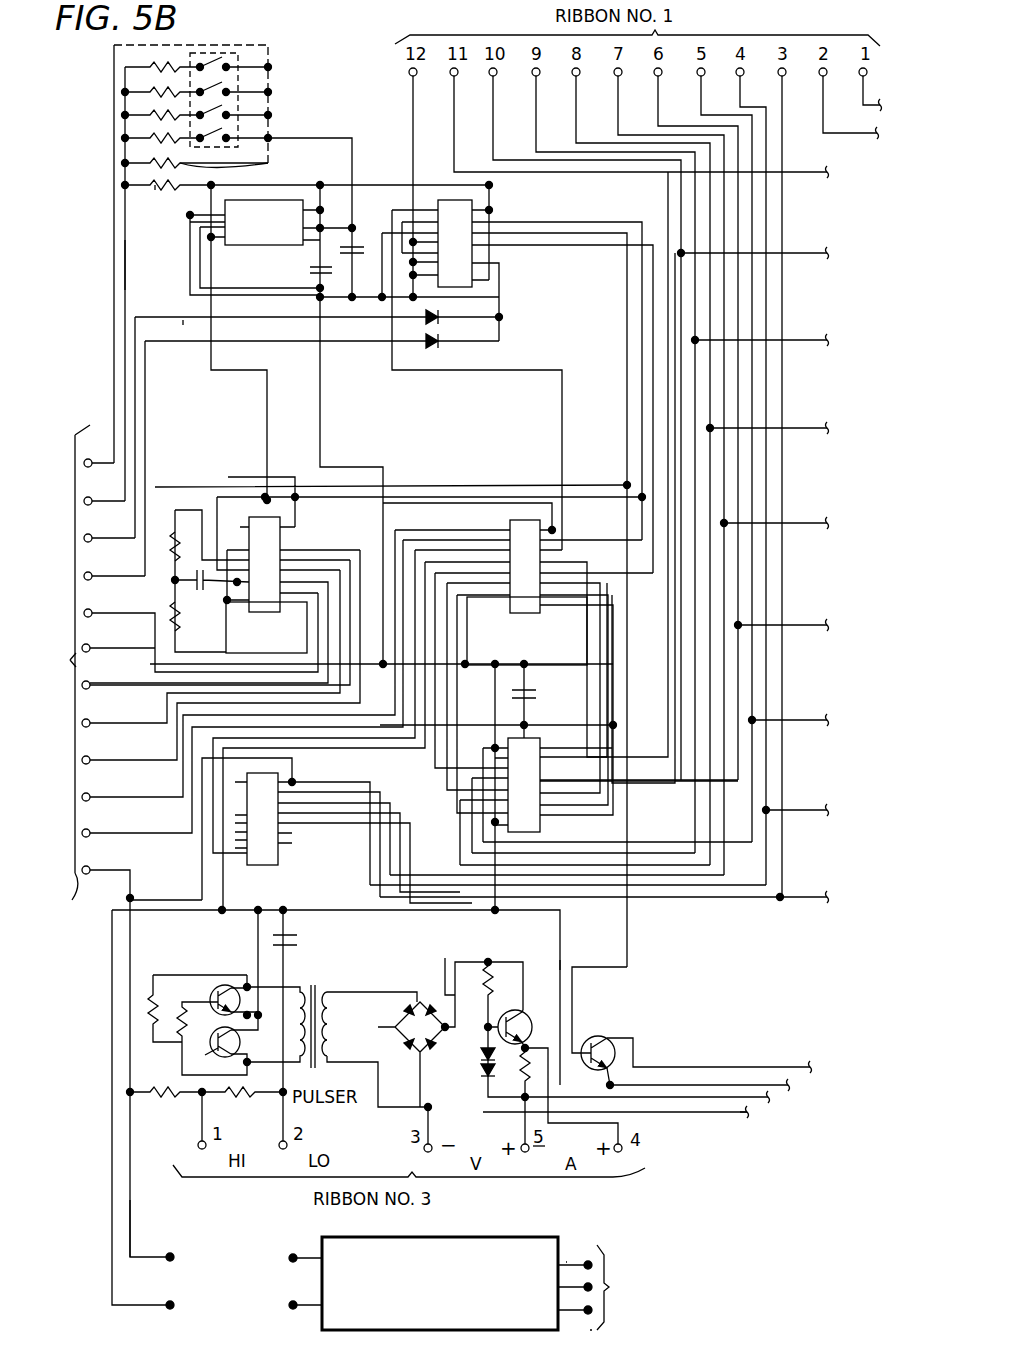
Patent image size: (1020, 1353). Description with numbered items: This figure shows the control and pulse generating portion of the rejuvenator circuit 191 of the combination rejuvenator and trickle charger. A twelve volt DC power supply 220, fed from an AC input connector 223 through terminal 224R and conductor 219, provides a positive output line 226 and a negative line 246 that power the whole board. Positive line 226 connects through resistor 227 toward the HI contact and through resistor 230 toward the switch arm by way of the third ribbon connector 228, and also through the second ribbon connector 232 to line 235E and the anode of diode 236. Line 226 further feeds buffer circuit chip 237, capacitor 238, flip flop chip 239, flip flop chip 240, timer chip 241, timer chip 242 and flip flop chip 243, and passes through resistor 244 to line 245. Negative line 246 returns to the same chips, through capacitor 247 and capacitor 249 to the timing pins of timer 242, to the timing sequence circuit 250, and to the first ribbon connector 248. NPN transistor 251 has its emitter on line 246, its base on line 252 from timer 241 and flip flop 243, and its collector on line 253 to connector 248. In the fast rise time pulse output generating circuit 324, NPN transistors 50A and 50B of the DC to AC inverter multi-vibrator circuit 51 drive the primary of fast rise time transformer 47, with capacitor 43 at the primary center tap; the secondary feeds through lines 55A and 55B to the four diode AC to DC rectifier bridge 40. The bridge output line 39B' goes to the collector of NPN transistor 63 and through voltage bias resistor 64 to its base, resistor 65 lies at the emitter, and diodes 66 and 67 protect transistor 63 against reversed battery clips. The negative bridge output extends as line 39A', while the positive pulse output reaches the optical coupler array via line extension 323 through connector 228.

The rejuvenator circuit 191 is at (96, 138).
The No. 1 ribbon connector 248 is at (395, 40).
The timing sequence circuit 250 is at (240, 82).
The NPN transistor 251 is at (200, 170).
The resistor 244 is at (155, 190).
The line 245 is at (125, 265).
The timer chip 242 is at (233, 238).
The capacitor 247 is at (308, 264).
The capacitor 249 is at (357, 240).
The flip flop chip 243 is at (463, 207).
The diode 236 is at (430, 315).
The line 235E is at (183, 322).
The No. 2 ribbon connector 232 is at (344, 841).
The timer chip 241 is at (278, 535).
The flip flop chip 240 is at (513, 525).
The capacitor 238 is at (530, 692).
The flip flop chip 239 is at (545, 822).
The buffer circuit chip 237 is at (268, 862).
The negative line 246 is at (112, 1148).
The DC to AC inverter multi-vibrator circuit 51 is at (178, 968).
The NPN transistor 50A is at (218, 980).
The NPN transistor 50B is at (205, 1055).
The capacitor 43 is at (296, 934).
The transformer 47 is at (316, 984).
The line 55A is at (337, 990).
The line 55B is at (338, 1060).
The AC to DC rectifier bridge 40 is at (428, 990).
The line 39B' is at (462, 958).
The voltage bias resistor 64 is at (492, 975).
The NPN transistor 63 is at (525, 1012).
The diode 66 is at (480, 1052).
The diode 67 is at (480, 1072).
The resistor 65 is at (520, 1070).
The line 39A' is at (457, 1127).
The resistor 227 is at (157, 1100).
The resistor 230 is at (240, 1100).
The fast rise time pulse output generating circuit 324 is at (563, 965).
The line 252 is at (628, 938).
The line 253 is at (702, 1066).
The line extension 323 is at (757, 1105).
The No. 3 ribbon connector 228 is at (615, 1180).
The positive output line 226 is at (130, 1217).
The 12 volt DC power supply 220 is at (322, 1240).
The AC input terminal 224R is at (567, 1260).
The AC input connector 223 is at (580, 1290).
The AC input conductor 219 is at (590, 1330).